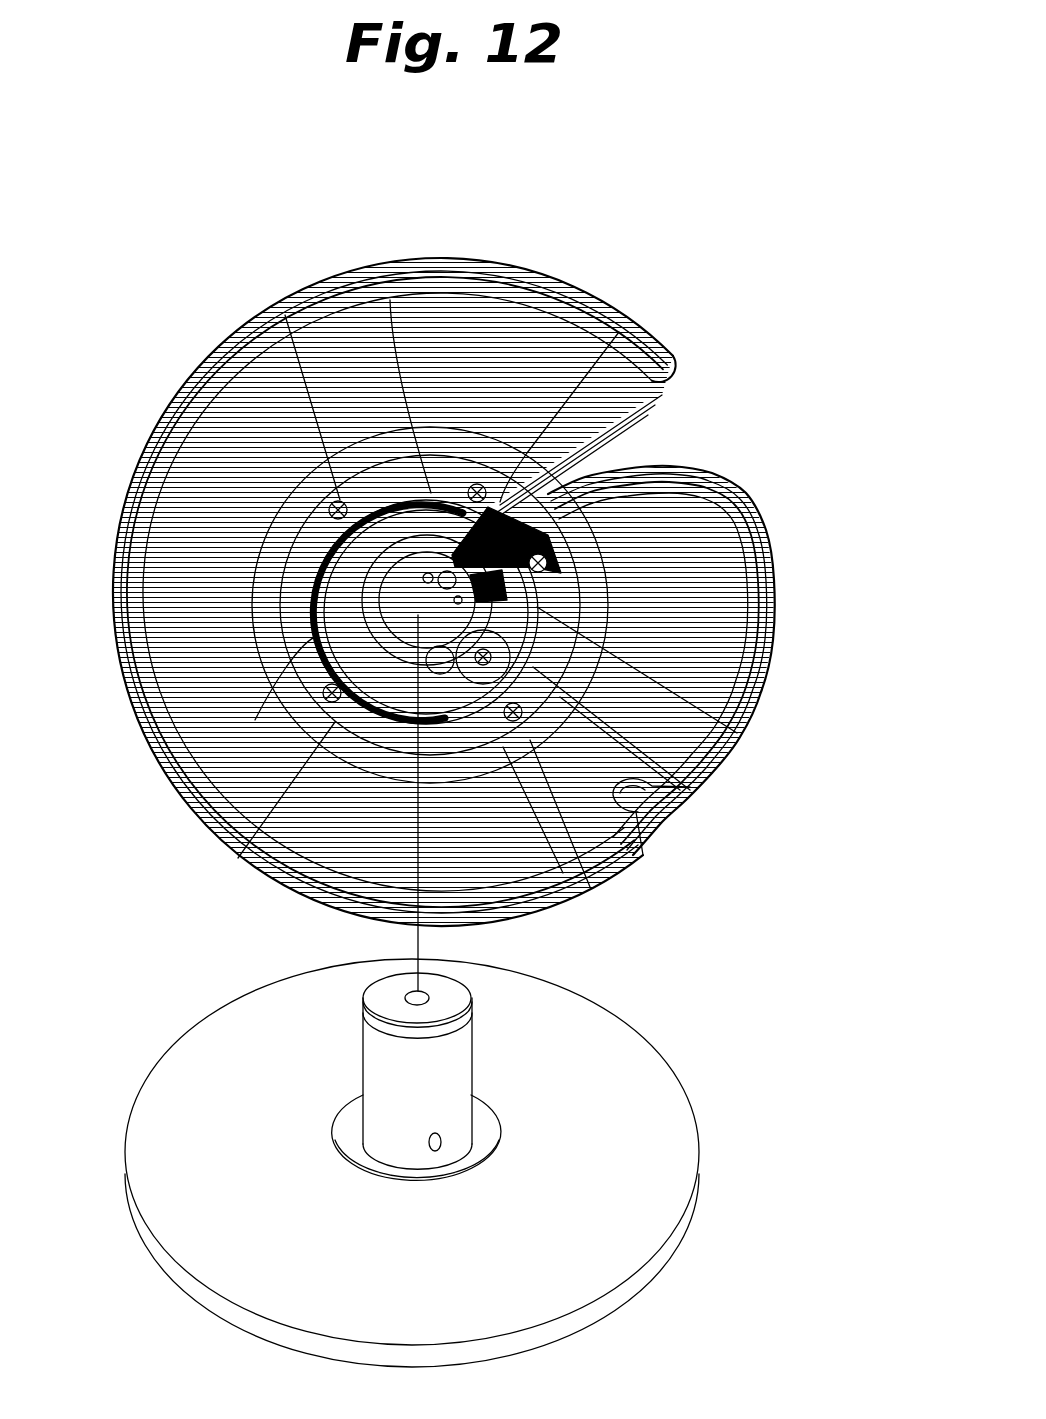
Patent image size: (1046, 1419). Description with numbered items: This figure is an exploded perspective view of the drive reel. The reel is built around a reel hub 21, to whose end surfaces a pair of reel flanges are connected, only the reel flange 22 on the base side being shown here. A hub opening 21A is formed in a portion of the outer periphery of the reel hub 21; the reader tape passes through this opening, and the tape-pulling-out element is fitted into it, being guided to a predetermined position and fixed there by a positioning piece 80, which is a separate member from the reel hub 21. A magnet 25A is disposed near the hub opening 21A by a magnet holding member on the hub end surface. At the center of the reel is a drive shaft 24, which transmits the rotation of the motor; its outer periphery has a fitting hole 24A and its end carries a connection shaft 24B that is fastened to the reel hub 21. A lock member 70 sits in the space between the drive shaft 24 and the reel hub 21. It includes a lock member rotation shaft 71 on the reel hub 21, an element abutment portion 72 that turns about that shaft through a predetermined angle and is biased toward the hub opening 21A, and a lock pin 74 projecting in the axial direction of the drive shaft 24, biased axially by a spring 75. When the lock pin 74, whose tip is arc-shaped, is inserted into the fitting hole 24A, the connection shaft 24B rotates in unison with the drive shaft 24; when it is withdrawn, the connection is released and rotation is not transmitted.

The reel hub 21 is at (318, 636).
The hub opening 21A is at (552, 548).
The reel flange 22 is at (643, 400).
The drive shaft 24 is at (453, 1070).
The fitting hole 24A is at (441, 1142).
The connection shaft 24B is at (472, 1012).
The magnet 25A is at (390, 300).
The lock member 70 is at (736, 733).
The lock member rotation shaft 71 is at (700, 795).
The element abutment portion 72 is at (318, 563).
The lock pin 74 is at (426, 670).
The spring 75 is at (700, 772).
The positioning piece 80 is at (619, 332).